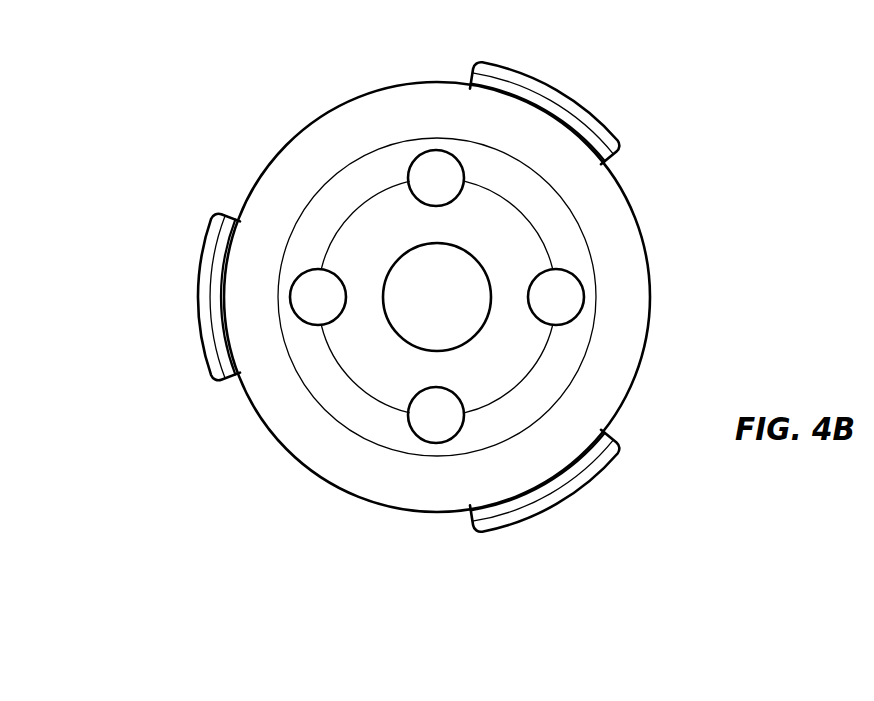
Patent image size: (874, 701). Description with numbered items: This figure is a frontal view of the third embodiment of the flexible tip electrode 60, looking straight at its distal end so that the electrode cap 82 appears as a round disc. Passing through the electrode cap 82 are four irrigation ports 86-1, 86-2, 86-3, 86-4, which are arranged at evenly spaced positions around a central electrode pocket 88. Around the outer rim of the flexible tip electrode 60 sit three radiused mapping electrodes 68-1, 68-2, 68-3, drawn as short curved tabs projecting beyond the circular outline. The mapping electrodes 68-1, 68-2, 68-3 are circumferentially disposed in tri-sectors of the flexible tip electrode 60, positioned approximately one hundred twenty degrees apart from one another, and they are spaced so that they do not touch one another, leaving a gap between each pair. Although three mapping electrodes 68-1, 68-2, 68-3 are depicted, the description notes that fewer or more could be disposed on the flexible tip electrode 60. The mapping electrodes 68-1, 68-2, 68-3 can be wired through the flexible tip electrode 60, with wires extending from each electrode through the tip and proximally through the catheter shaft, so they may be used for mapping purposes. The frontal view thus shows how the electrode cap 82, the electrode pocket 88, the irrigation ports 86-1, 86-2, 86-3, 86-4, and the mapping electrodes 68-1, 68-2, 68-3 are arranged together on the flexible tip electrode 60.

The flexible tip electrode 60 is at (676, 186).
The electrode cap 82 is at (322, 140).
The electrode pocket 88 is at (420, 318).
The irrigation port 86-1 is at (435, 170).
The irrigation port 86-2 is at (560, 293).
The irrigation port 86-3 is at (425, 430).
The irrigation port 86-4 is at (313, 282).
The mapping electrode 68-1 is at (565, 500).
The mapping electrode 68-2 is at (560, 90).
The mapping electrode 68-3 is at (197, 301).